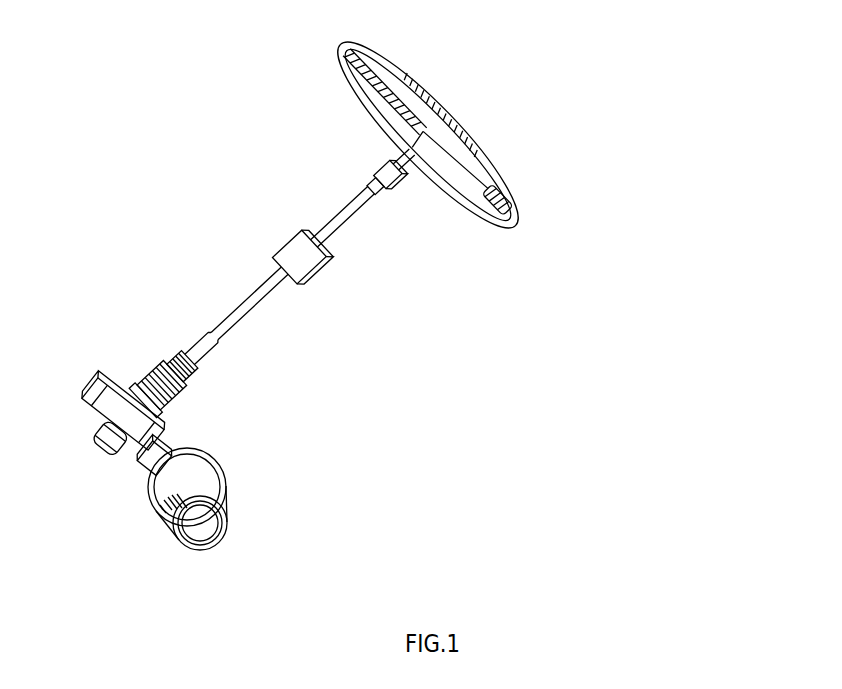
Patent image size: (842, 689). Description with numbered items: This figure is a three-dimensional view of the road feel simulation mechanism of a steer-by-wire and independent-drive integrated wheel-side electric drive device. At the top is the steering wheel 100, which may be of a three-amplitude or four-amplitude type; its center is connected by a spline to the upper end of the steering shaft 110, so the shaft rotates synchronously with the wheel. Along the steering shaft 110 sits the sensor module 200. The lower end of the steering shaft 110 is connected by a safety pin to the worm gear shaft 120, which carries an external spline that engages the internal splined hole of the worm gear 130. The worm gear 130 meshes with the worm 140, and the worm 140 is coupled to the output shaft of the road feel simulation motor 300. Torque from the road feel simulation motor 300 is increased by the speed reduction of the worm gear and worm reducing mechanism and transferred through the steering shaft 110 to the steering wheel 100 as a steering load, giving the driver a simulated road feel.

The steering wheel 100 is at (470, 167).
The steering shaft 110 is at (350, 218).
The sensor module 200 is at (305, 265).
The worm gear shaft 120 is at (155, 403).
The worm gear 130 is at (122, 430).
The worm 140 is at (170, 442).
The road feel simulation motor 300 is at (190, 487).